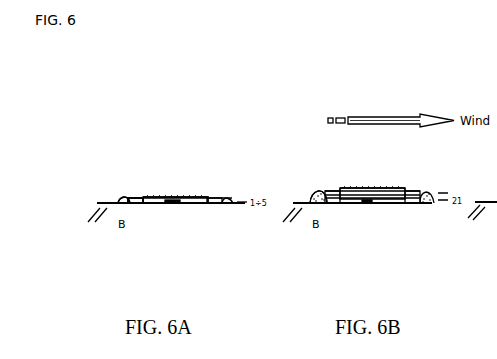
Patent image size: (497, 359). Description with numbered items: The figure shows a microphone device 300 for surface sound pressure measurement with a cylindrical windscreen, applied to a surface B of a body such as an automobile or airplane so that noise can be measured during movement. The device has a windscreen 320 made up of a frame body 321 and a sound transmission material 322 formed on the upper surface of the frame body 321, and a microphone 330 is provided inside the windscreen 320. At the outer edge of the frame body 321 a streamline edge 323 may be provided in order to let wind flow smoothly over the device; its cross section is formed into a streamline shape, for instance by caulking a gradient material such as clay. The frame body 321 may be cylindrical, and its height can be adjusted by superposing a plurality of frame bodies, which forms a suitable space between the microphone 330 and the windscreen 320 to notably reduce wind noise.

In FIG. 6A, the microphone device 300 is at (171, 153).
In FIG. 6B, the microphone device 300 is at (378, 163).
In FIG. 6A, the windscreen 320 is at (116, 112).
In FIG. 6B, the windscreen 320 is at (316, 109).
In FIG. 6A, the frame body 321 is at (135, 197).
In FIG. 6B, the frame body 321 is at (332, 189).
In FIG. 6A, the sound transmission material 322 is at (157, 197).
In FIG. 6B, the sound transmission material 322 is at (353, 188).
In FIG. 6A, the streamline edge 323 is at (122, 201).
In FIG. 6B, the streamline edge 323 is at (313, 194).
In FIG. 6A, the microphone 330 is at (170, 206).
In FIG. 6B, the microphone 330 is at (365, 205).